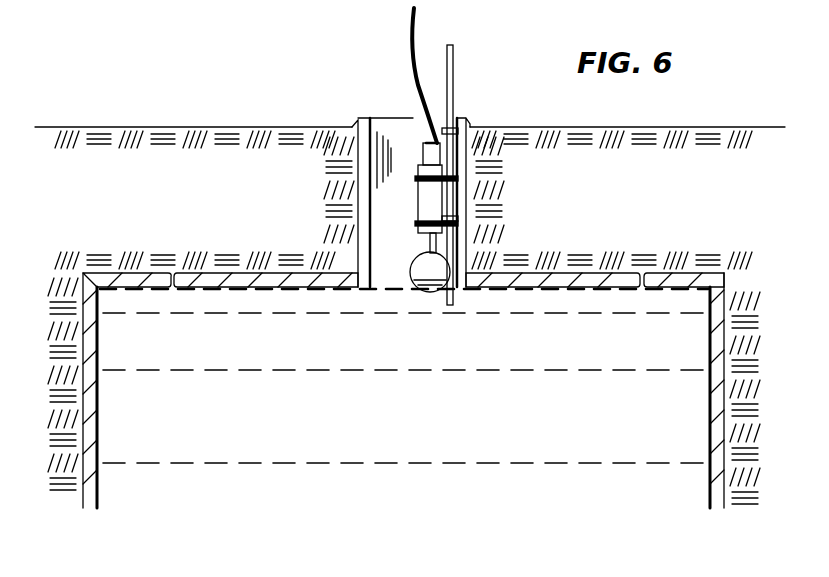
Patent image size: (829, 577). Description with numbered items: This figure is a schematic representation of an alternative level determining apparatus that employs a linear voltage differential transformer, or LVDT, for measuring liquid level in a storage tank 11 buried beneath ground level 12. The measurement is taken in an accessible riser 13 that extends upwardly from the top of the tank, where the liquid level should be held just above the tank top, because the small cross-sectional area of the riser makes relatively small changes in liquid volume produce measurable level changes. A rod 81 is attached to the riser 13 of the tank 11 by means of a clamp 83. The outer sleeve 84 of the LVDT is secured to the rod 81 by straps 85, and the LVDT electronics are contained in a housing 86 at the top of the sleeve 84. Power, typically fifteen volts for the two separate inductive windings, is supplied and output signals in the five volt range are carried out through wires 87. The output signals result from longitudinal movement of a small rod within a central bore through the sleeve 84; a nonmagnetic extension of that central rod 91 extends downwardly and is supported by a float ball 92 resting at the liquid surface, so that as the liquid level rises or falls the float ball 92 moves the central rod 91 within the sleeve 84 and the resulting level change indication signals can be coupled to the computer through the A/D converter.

The storage tank 11 is at (116, 271).
The ground level 12 is at (212, 198).
The riser 13 is at (463, 182).
The rod 81 is at (451, 84).
The clamp 83 is at (458, 128).
The outer sleeve 84 is at (428, 203).
The straps 85 is at (460, 222).
The housing 86 is at (430, 143).
The wires 87 is at (412, 50).
The central rod 91 is at (430, 250).
The float ball 92 is at (421, 288).